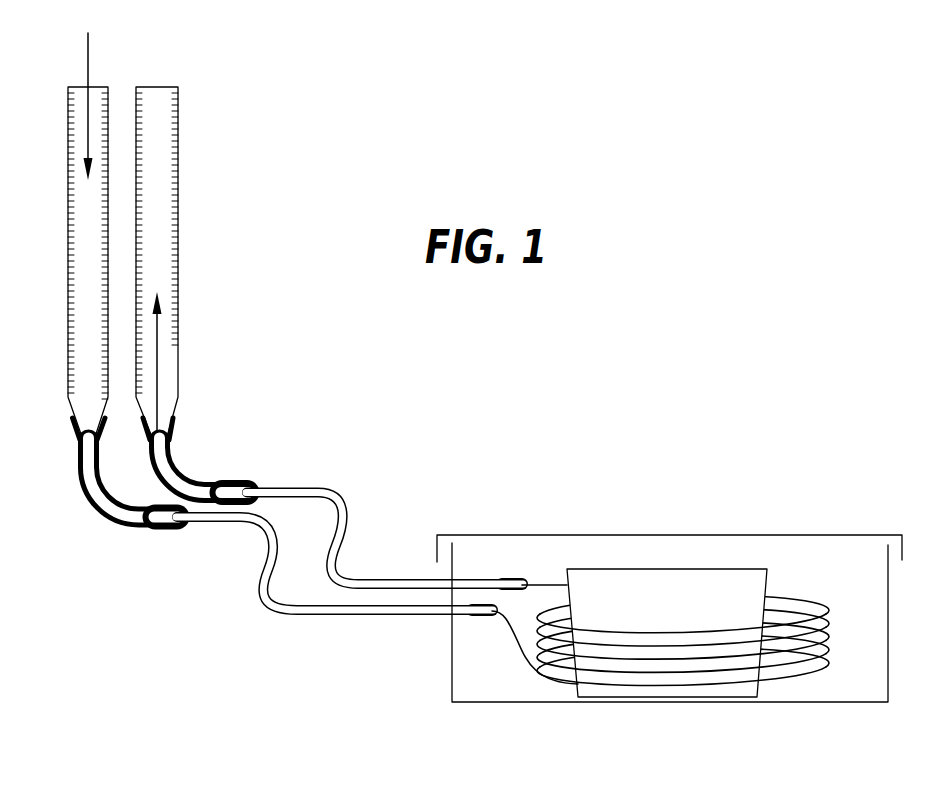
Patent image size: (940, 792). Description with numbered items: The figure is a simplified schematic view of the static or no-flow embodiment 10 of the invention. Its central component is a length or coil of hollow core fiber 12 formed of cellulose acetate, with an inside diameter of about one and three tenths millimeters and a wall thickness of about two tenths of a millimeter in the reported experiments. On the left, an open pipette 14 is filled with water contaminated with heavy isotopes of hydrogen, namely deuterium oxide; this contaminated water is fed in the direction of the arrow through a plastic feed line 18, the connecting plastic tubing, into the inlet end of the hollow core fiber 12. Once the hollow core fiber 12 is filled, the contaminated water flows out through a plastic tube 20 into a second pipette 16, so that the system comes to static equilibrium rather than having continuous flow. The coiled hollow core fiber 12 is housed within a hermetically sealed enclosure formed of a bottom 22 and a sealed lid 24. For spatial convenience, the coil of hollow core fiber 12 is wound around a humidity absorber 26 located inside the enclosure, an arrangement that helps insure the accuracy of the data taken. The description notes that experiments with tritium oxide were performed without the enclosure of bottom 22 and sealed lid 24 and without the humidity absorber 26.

The static or no-flow embodiment 10 is at (461, 440).
The hollow core fiber 12 is at (780, 681).
The open pipette 14 is at (68, 151).
The second pipette 16 is at (178, 152).
The plastic feed line 18 is at (302, 616).
The plastic tube 20 is at (344, 536).
The bottom 22 is at (498, 702).
The sealed lid 24 is at (535, 535).
The humidity absorber 26 is at (655, 569).